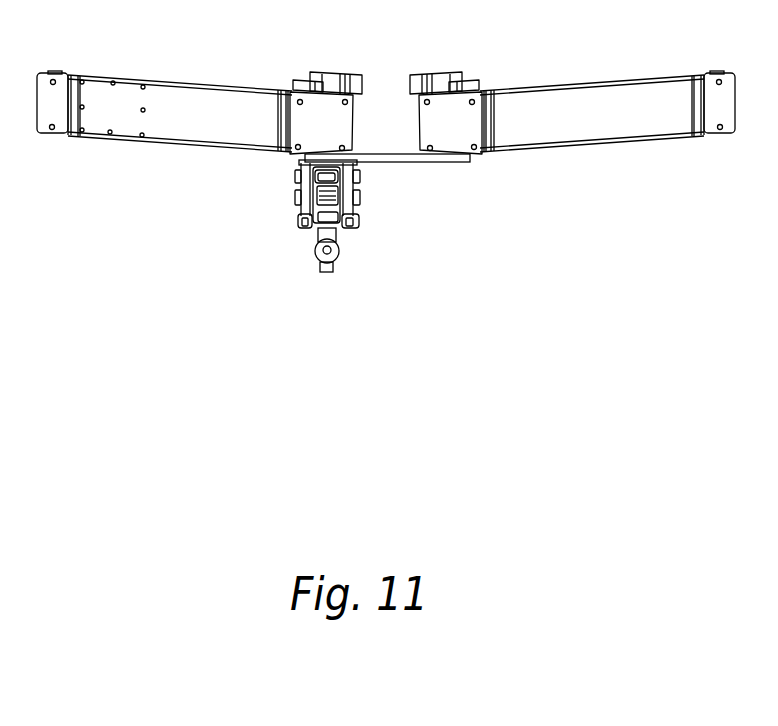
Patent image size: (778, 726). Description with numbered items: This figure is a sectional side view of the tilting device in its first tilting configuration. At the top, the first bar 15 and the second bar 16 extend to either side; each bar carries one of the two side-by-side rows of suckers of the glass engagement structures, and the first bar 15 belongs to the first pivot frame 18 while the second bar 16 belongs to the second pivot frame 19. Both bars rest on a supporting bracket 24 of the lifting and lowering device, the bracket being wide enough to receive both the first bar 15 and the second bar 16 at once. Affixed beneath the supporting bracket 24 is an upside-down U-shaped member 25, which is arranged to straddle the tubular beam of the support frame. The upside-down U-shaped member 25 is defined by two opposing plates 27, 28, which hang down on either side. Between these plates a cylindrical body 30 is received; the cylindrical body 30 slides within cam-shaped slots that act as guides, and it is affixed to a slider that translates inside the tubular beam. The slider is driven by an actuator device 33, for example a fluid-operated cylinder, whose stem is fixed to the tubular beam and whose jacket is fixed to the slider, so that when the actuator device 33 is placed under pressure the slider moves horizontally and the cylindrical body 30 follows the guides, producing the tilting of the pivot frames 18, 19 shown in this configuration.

The first bar 15 is at (316, 113).
The second bar 16 is at (442, 115).
The first pivot frame 18 is at (162, 80).
The second pivot frame 19 is at (582, 82).
The supporting bracket 24 is at (380, 152).
The upside-down U-shaped member 25 is at (295, 227).
The opposing plate 27 is at (297, 212).
The opposing plate 28 is at (357, 217).
The cylindrical body 30 is at (310, 227).
The actuator device 33 is at (327, 275).